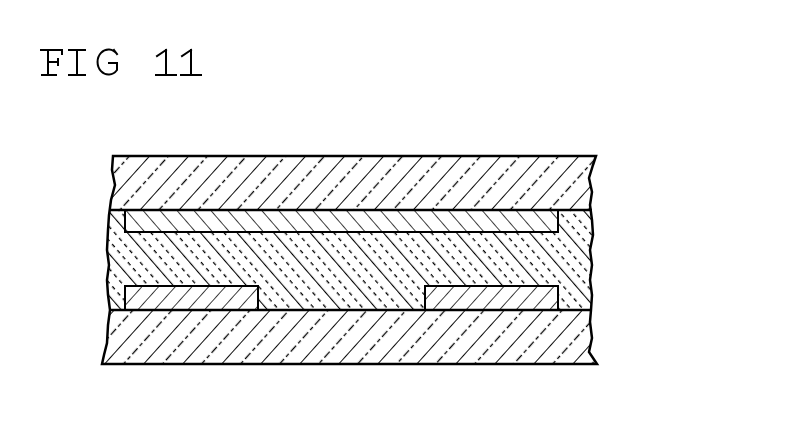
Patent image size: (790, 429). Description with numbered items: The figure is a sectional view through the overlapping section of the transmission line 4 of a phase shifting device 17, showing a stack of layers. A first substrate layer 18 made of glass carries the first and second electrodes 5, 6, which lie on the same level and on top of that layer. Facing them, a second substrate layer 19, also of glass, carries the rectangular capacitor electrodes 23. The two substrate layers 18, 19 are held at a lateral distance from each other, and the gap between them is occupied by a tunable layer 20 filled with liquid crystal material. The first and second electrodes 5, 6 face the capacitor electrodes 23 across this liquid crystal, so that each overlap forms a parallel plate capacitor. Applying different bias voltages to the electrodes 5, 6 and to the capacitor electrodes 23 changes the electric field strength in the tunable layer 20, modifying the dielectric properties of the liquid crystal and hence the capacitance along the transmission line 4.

The transmission line 4 is at (582, 134).
The phase shifting device 17 is at (620, 255).
The first substrate layer 18 is at (122, 192).
The second substrate layer 19 is at (118, 326).
The tunable layer 20 is at (120, 258).
The capacitor electrodes 23 is at (308, 224).
The second electrode 6 is at (196, 298).
The first electrode 5 is at (496, 298).